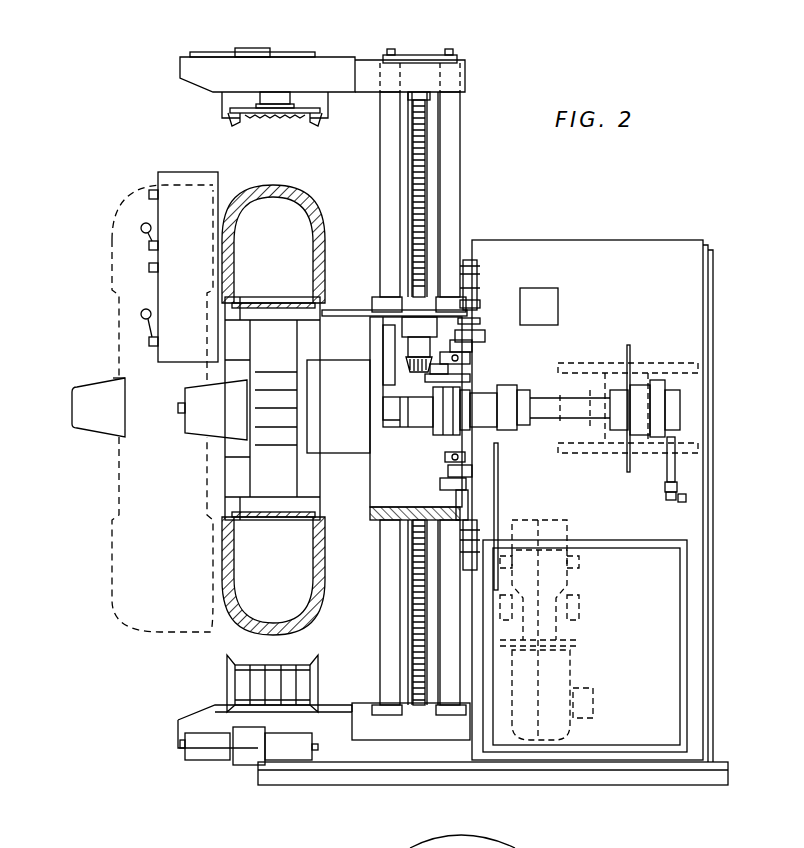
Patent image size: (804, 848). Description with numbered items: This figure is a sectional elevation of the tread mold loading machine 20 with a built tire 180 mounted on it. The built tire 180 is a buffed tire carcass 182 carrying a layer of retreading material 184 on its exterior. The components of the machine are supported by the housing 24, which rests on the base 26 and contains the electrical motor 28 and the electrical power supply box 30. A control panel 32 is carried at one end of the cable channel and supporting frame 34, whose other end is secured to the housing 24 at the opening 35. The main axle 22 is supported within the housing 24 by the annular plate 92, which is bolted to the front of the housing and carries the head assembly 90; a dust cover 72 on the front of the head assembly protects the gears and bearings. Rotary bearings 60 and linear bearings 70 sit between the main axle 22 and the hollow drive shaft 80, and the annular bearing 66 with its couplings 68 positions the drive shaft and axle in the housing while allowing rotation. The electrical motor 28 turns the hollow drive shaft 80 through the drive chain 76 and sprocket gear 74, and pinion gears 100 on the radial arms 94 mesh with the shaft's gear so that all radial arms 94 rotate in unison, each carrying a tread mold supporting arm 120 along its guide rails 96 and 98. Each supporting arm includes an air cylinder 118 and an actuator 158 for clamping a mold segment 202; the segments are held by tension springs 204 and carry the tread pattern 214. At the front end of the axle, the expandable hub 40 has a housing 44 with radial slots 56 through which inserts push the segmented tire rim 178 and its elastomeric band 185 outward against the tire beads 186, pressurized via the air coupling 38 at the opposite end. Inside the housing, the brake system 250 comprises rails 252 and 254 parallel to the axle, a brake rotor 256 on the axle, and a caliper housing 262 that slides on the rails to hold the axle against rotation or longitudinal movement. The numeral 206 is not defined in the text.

The tread mold loading machine 20 is at (145, 790).
The main axle 22 is at (538, 397).
The housing 24 is at (605, 238).
The base 26 is at (718, 773).
The electrical motor 28 is at (572, 670).
The electrical power supply box 30 is at (607, 540).
The control panel 32 is at (158, 178).
The cable channel and supporting frame 34 is at (352, 316).
The opening 35 is at (560, 302).
The air coupling 38 is at (682, 434).
The expandable hub 40 is at (90, 432).
The housing 44 is at (185, 398).
The radial slots 56 is at (272, 385).
The rotary bearings 60 is at (433, 432).
The annular bearing 66 is at (448, 480).
The couplings 68 is at (478, 312).
The linear bearings 70 is at (402, 430).
The dust cover 72 is at (385, 338).
The sprocket gear 74 is at (497, 438).
The drive chain 76 is at (498, 462).
The hollow drive shaft 80 is at (455, 385).
The head assembly 90 is at (370, 525).
The annular plate 92 is at (465, 262).
The radial arms 94 is at (425, 118).
The guide rail 96 is at (380, 150).
The guide rail 98 is at (460, 168).
The pinion gears 100 is at (405, 368).
The air cylinder 118 is at (280, 92).
The tread mold supporting arms 120 is at (372, 60).
The actuator 158 is at (238, 48).
The tire rim 178 is at (218, 510).
The built tire 180 is at (108, 228).
The tire carcass 182 is at (322, 222).
The retreading material 184 is at (262, 190).
The elastomeric band 185 is at (240, 300).
The tire beads 186 is at (258, 302).
The mold segments 202 is at (295, 118).
The tension springs 204 is at (228, 740).
The wheel assembly 206 is at (210, 150).
The tread pattern 214 is at (255, 680).
The brake system 250 is at (650, 362).
The rail 252 is at (697, 366).
The rail 254 is at (690, 455).
The brake rotor 256 is at (628, 345).
The caliper housing 262 is at (600, 432).